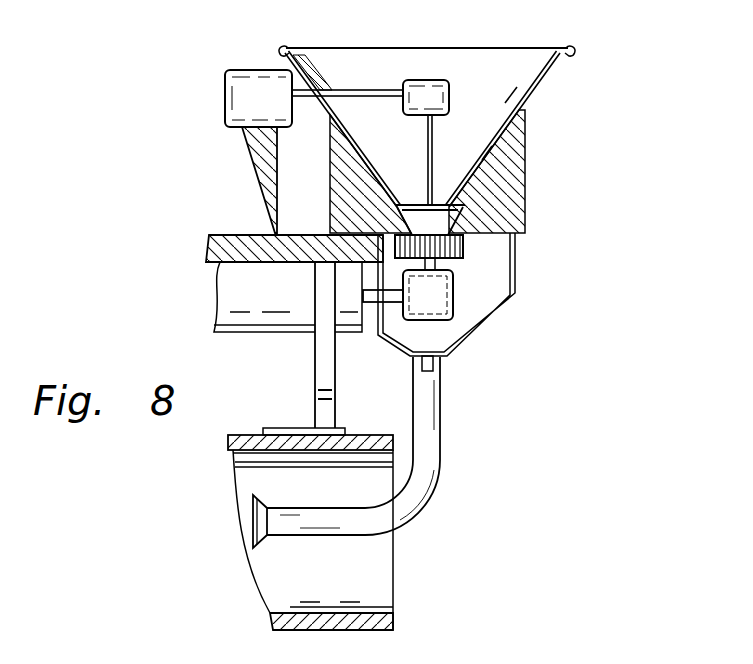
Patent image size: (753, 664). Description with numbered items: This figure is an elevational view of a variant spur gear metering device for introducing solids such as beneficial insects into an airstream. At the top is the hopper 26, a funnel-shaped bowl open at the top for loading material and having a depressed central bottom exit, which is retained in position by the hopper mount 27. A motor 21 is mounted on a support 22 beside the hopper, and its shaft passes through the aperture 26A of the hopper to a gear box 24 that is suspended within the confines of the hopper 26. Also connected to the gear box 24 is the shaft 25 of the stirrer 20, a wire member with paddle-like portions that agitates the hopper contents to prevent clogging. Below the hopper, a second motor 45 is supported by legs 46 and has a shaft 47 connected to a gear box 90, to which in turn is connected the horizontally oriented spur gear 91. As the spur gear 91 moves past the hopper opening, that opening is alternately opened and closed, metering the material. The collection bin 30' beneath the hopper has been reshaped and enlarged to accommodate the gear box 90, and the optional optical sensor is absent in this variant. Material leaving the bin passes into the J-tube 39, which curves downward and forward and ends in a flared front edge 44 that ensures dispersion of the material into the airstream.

The stirrer 20 is at (410, 218).
The motor 21 is at (240, 98).
The support 22 is at (248, 183).
The gear box 24 is at (424, 92).
The shaft 25 is at (353, 90).
The hopper 26 is at (543, 80).
The aperture 26A is at (323, 78).
The hopper mount 27 is at (523, 202).
The collection bin 30' is at (472, 302).
The J-tube 39 is at (392, 515).
The flared front edge 44 is at (258, 507).
The motor 45 is at (284, 304).
The legs 46 is at (327, 353).
The shaft 47 is at (364, 302).
The gear box 90 is at (437, 287).
The spur gear 91 is at (463, 250).